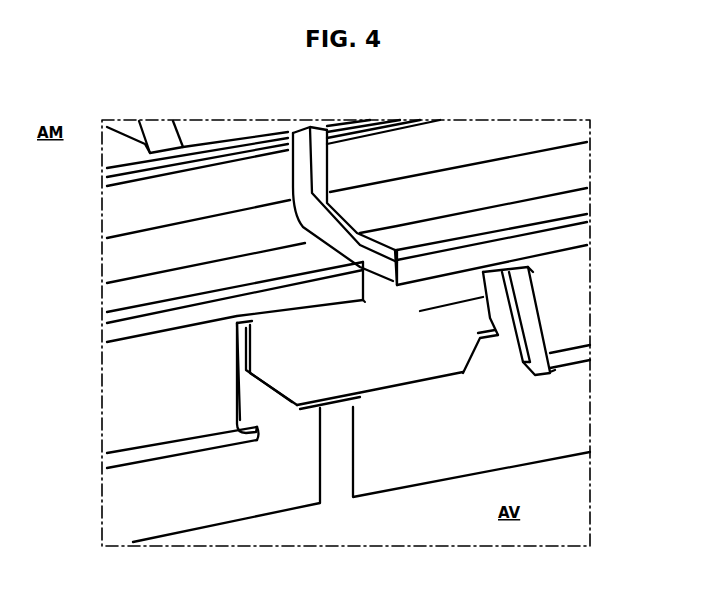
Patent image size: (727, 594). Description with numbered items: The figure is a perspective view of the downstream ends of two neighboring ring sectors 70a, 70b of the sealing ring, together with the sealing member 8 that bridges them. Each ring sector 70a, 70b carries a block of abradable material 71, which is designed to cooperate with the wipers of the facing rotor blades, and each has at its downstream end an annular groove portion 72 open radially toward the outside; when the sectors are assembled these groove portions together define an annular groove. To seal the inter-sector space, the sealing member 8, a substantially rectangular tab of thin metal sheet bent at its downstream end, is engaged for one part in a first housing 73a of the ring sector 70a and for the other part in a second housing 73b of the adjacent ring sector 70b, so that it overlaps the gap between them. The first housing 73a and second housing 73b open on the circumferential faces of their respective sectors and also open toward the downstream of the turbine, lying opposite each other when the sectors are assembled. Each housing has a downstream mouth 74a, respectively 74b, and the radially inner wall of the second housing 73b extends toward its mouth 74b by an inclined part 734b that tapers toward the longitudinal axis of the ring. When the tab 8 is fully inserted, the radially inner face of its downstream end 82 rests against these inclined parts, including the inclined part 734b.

The annular groove portion 72 is at (296, 128).
The ring sector 70b is at (347, 231).
The ring sector 70a is at (183, 424).
The sealing member 8 is at (374, 330).
The block of abradable material 71 is at (361, 443).
The downstream end 82 is at (349, 372).
The first housing 73a is at (357, 312).
The mouth 74a is at (264, 328).
The mouth 74b is at (489, 282).
The second housing 73b is at (418, 298).
The inclined part 734b is at (492, 356).